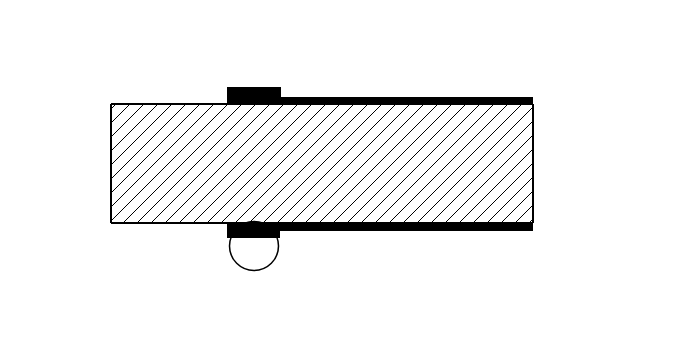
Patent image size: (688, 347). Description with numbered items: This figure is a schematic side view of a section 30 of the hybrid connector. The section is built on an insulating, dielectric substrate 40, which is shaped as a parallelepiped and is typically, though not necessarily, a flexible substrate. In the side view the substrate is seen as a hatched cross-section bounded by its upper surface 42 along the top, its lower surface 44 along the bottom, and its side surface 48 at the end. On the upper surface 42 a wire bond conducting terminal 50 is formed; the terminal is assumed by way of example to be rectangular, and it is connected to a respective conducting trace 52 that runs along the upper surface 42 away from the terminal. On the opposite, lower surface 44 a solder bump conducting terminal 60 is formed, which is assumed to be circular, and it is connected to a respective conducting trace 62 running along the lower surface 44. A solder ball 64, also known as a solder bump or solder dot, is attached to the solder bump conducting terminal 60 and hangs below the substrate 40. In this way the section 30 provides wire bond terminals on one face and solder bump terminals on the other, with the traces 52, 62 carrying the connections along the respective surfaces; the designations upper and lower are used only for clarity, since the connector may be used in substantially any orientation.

The section 30 is at (120, 104).
The substrate 40 is at (324, 163).
The upper surface 42 is at (177, 104).
The lower surface 44 is at (177, 223).
The side surface 48 is at (513, 140).
The wire bond conducting terminal 50 is at (243, 87).
The conducting trace 52 is at (410, 97).
The solder bump conducting terminal 60 is at (280, 235).
The conducting trace 62 is at (439, 231).
The solder ball 64 is at (277, 262).